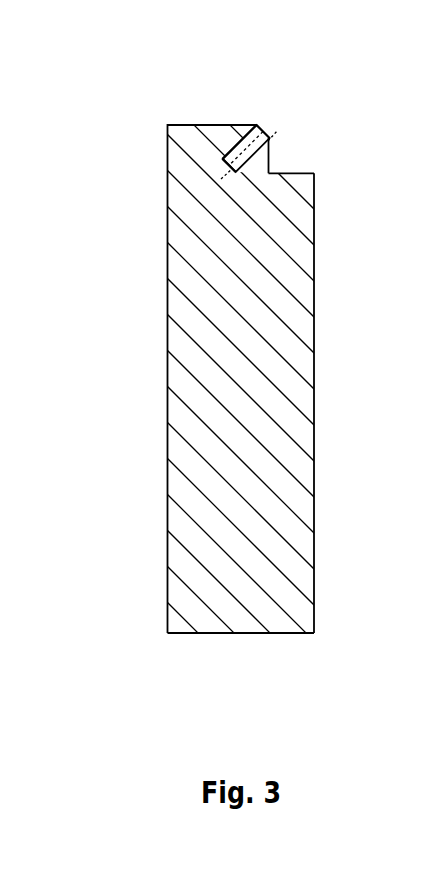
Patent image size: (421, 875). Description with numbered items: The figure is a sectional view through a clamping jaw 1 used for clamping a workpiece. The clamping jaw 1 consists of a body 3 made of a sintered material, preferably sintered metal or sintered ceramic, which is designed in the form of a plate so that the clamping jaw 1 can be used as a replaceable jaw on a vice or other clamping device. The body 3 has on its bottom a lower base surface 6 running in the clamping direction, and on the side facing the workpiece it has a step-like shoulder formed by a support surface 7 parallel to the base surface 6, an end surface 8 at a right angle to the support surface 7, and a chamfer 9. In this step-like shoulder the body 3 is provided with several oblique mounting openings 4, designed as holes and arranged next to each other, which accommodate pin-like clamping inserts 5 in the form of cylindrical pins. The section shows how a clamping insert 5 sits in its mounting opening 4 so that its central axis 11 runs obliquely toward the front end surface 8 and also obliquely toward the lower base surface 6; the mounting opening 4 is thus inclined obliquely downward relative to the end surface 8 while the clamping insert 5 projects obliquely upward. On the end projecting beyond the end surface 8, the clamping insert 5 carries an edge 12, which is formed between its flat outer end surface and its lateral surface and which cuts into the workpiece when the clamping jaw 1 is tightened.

The clamping jaw 1 is at (140, 508).
The body 3 is at (190, 385).
The mounting openings 4 is at (222, 160).
The clamping inserts 5 is at (230, 153).
The base surface 6 is at (253, 633).
The support surface 7 is at (300, 173).
The end surface 8 is at (267, 163).
The chamfer 9 is at (256, 130).
The central axis 11 is at (247, 150).
The edge 12 is at (270, 153).